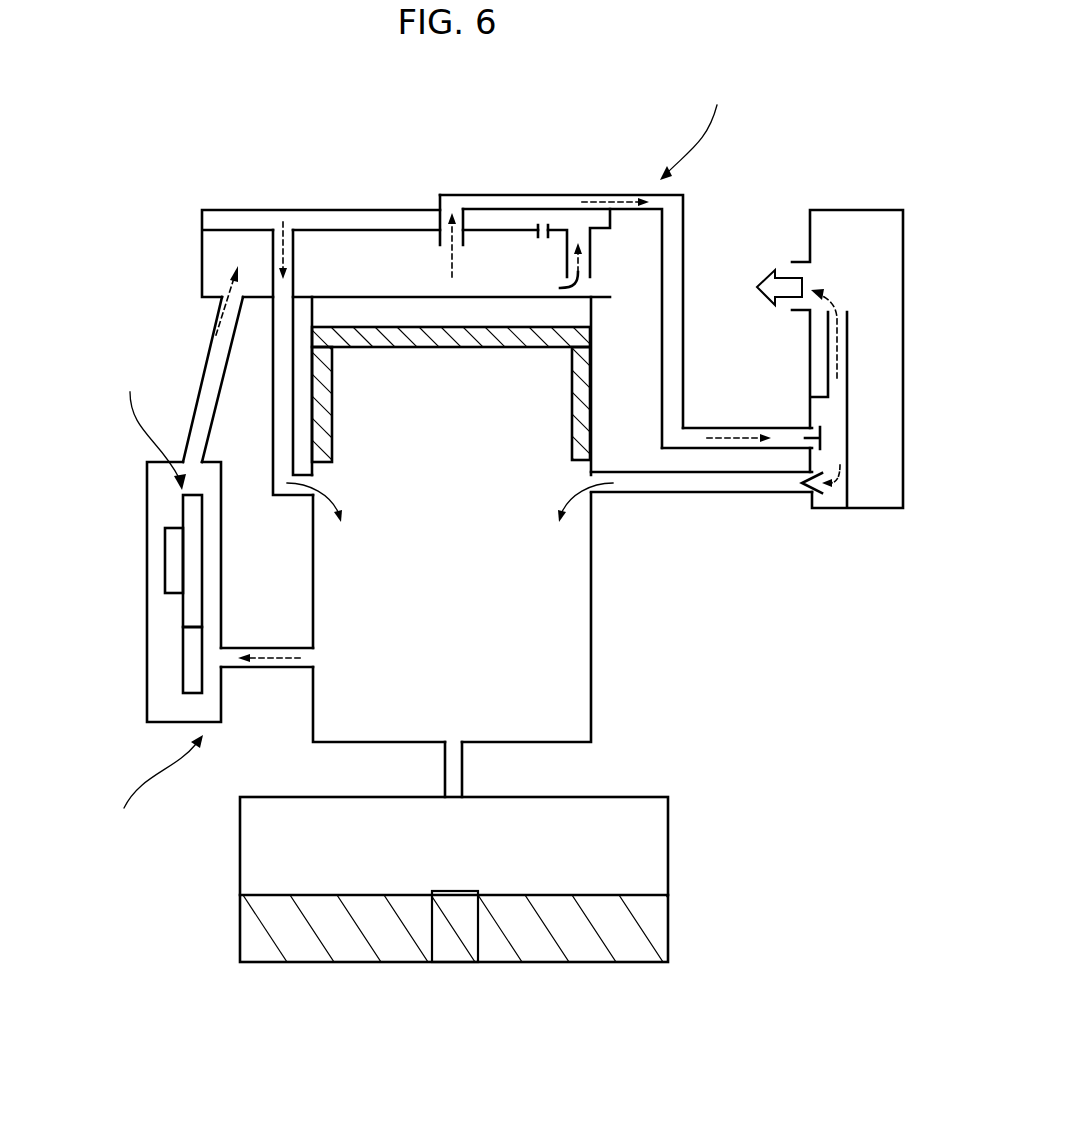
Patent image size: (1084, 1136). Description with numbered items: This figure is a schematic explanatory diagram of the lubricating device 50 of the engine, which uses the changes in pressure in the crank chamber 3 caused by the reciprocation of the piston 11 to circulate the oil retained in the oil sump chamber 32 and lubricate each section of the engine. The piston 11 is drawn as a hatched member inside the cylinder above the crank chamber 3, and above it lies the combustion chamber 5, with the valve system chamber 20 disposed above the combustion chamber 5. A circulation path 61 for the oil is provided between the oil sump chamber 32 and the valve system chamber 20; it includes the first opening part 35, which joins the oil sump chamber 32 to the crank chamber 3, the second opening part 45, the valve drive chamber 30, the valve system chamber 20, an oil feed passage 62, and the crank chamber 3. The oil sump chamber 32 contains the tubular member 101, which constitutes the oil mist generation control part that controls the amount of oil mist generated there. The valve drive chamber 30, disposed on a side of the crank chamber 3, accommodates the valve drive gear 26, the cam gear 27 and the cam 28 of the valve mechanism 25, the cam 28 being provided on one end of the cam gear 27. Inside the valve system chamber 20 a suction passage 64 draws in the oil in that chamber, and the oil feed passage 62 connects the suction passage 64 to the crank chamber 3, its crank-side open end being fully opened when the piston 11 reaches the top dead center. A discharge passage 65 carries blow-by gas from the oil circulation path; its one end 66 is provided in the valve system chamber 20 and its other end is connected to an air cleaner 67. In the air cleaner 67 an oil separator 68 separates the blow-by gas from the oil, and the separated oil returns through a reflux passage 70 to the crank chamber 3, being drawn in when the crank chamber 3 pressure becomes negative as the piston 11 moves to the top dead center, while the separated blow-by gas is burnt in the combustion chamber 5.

The crank chamber 3 is at (443, 558).
The combustion chamber 5 is at (334, 306).
The piston 11 is at (584, 370).
The valve system chamber 20 is at (348, 262).
The valve mechanism 25 is at (181, 378).
The valve drive gear 26 is at (195, 665).
The cam gear 27 is at (197, 608).
The cam 28 is at (173, 568).
The valve drive chamber 30 is at (147, 500).
The oil sump chamber 32 is at (625, 832).
The first opening part 35 is at (445, 765).
The second opening part 45 is at (258, 668).
The lubricating device 50 is at (693, 130).
The circulation path 61 is at (154, 786).
The oil feed passage 62 is at (275, 400).
The suction passage 64 is at (421, 216).
The discharge passage 65 is at (572, 194).
The one end of the discharge passage 66 is at (453, 238).
The air cleaner 67 is at (904, 252).
The oil separator 68 is at (812, 437).
The reflux passage 70 is at (750, 494).
The tubular member 101 is at (440, 891).